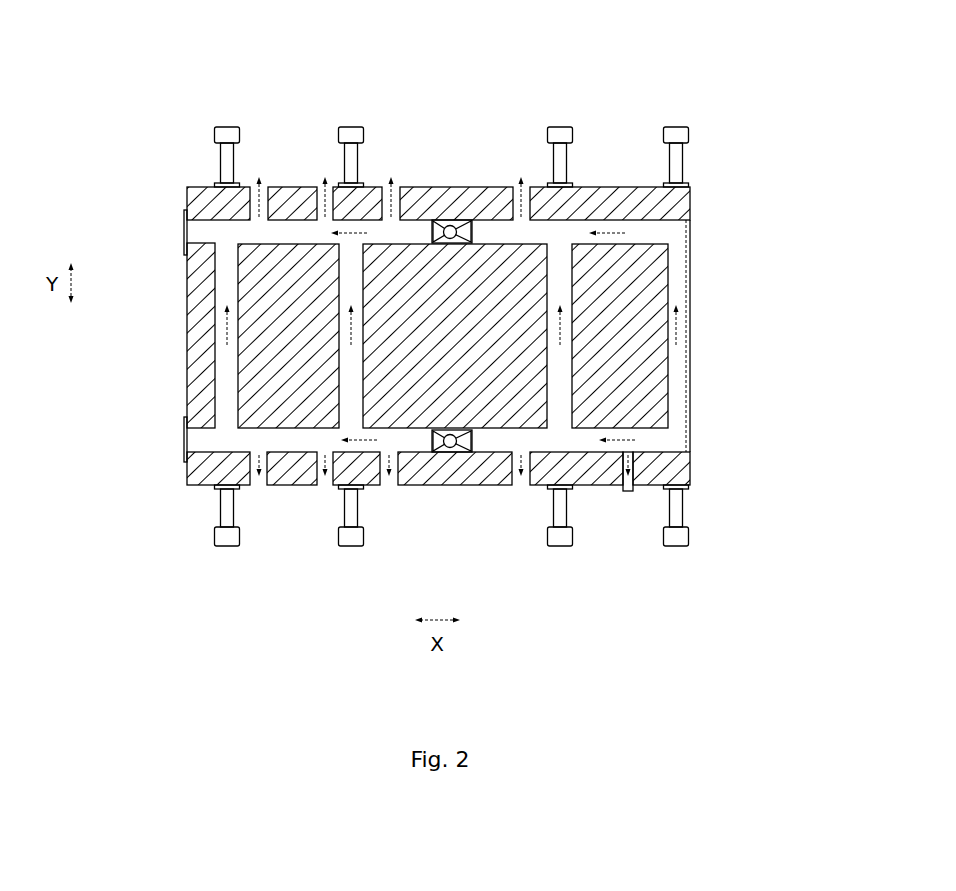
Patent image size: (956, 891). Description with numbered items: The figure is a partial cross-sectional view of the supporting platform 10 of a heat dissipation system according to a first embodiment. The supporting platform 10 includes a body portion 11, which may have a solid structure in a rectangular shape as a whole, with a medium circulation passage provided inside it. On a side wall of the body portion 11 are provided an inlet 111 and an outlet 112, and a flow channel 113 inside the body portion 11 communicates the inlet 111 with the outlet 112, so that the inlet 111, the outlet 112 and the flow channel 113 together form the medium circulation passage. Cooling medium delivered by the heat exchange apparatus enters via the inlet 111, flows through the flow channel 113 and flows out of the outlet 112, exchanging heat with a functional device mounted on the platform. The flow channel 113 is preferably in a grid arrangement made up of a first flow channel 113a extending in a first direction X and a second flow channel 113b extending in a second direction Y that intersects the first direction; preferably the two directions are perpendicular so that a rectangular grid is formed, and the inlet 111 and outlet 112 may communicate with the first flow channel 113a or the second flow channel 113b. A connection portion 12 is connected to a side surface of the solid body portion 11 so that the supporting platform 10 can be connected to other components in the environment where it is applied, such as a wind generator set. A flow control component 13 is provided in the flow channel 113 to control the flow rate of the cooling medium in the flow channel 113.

The supporting platform 10 is at (447, 32).
The body portion 11 is at (183, 376).
The inlet 111 is at (632, 491).
The outlet 112 is at (258, 190).
The flow channel 113 is at (775, 232).
The first flow channel 113a is at (655, 232).
The second flow channel 113b is at (680, 282).
The connection portion 12 is at (220, 162).
The flow control component 13 is at (450, 226).